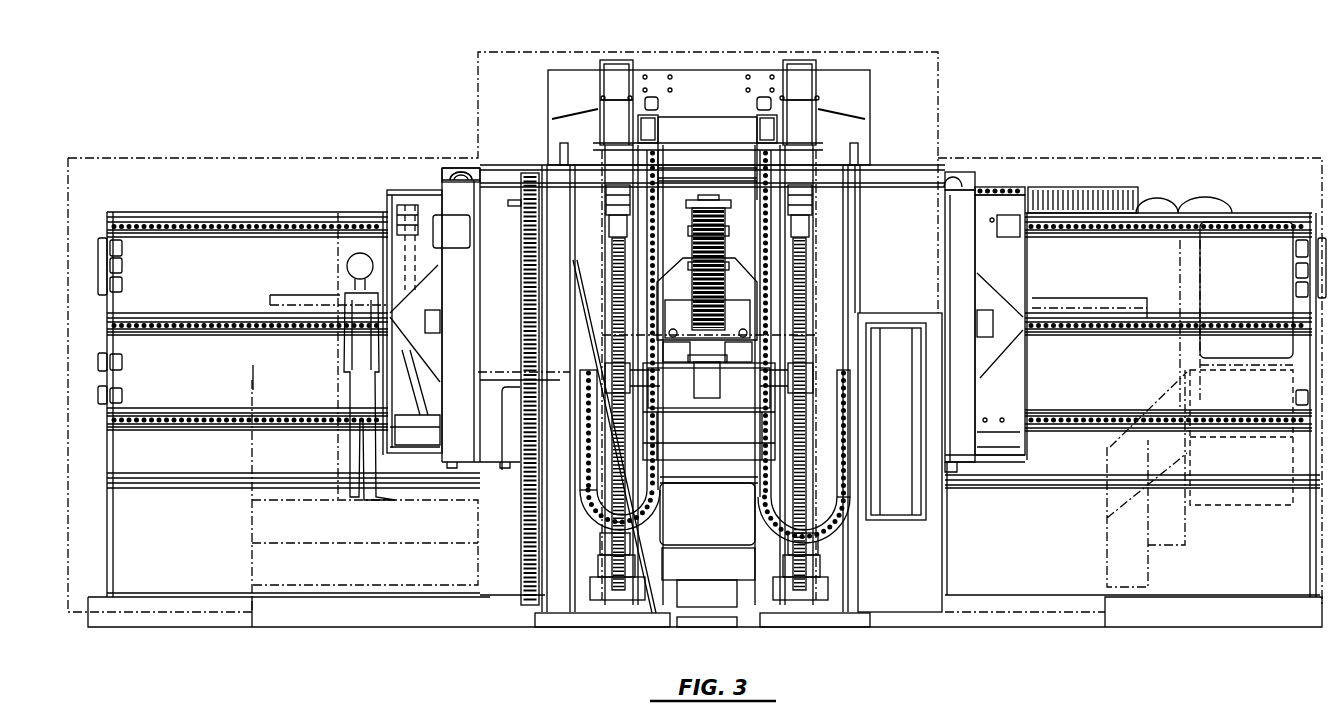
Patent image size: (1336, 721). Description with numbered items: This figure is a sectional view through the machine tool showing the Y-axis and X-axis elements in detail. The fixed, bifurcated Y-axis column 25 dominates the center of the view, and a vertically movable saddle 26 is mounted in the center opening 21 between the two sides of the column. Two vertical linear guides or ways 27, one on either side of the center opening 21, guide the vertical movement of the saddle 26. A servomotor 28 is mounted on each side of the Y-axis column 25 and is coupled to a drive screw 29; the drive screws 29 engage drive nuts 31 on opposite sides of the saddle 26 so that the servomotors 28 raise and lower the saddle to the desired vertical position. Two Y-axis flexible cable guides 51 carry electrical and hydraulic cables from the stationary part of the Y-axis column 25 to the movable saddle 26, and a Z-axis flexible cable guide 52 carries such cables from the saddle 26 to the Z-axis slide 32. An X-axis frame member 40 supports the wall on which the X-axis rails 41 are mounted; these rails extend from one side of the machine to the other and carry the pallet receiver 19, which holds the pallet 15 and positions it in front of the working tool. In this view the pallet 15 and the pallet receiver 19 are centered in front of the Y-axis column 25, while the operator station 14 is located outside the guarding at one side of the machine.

The operator station 14 is at (273, 498).
The pallet 15 is at (457, 197).
The pallet receiver 19 is at (1008, 262).
The center opening 21 is at (663, 177).
The Y-axis column 25 is at (700, 70).
The saddle 26 is at (678, 398).
The vertical linear guides or ways 27 is at (762, 190).
The servomotor 28 is at (617, 118).
The drive screw 29 is at (613, 265).
The drive nut 31 is at (610, 373).
The Z-axis slide 32 is at (744, 313).
The X-axis frame member 40 is at (935, 98).
The X-axis rails 41 is at (213, 317).
The Y-axis flexible cable guide 51 is at (653, 512).
The Z-axis flexible cable guide 52 is at (725, 230).